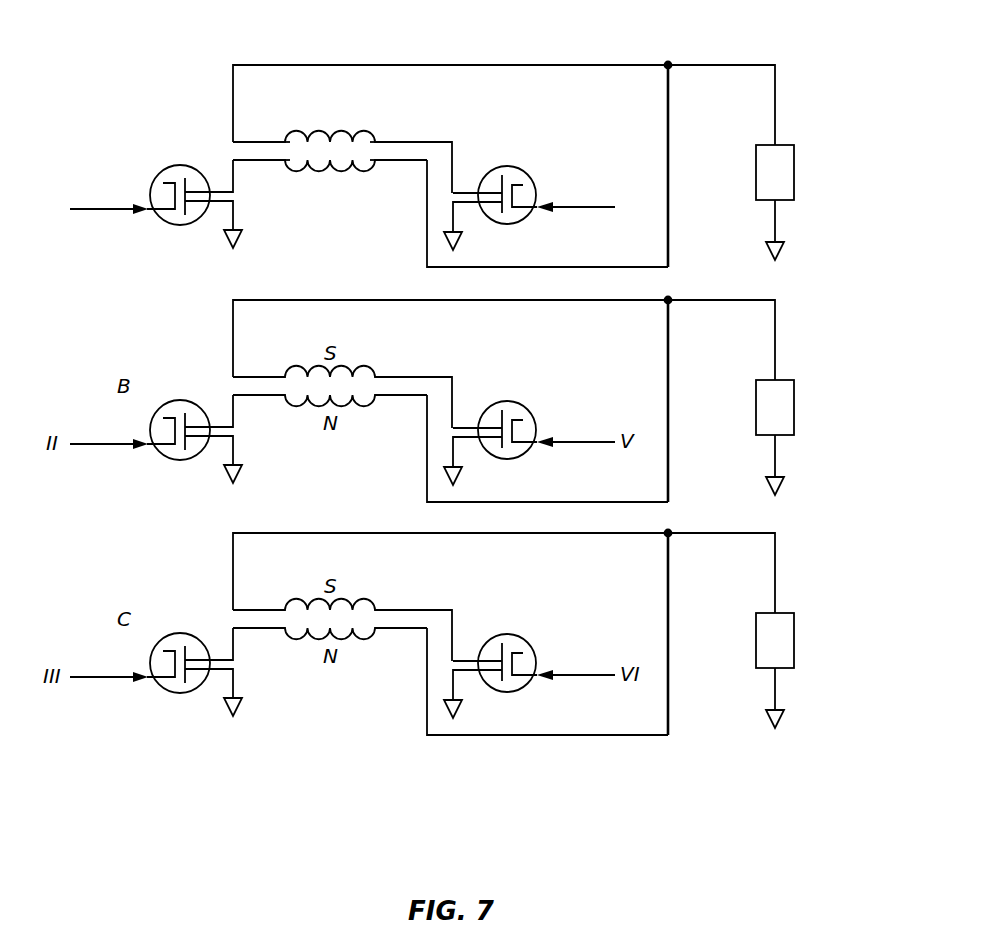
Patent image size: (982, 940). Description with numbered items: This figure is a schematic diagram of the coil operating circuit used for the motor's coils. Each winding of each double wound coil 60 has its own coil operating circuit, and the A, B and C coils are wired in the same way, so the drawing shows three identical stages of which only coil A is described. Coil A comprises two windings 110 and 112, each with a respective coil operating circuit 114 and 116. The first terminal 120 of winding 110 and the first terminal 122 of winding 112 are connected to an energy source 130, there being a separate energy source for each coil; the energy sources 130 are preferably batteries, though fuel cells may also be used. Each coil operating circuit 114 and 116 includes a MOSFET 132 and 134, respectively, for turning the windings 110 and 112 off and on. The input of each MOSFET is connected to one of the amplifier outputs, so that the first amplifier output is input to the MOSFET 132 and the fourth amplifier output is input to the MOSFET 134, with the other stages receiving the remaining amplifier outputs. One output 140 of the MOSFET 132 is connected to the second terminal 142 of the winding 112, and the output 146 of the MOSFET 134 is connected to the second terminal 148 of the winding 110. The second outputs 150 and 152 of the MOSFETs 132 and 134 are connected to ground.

The double wound coil 60 is at (120, 60).
The winding 110 is at (365, 130).
The winding 112 is at (295, 172).
The coil operating circuit 114 is at (545, 198).
The coil operating circuit 116 is at (142, 215).
The first terminal 120 is at (282, 140).
The first terminal 122 is at (373, 170).
The energy source 130 is at (795, 172).
The MOSFET 132 is at (182, 227).
The MOSFET 134 is at (520, 168).
The output 140 is at (233, 173).
The second terminal 142 is at (285, 168).
The output 146 is at (455, 150).
The second terminal 148 is at (375, 140).
The second output 150 is at (218, 203).
The second output 152 is at (458, 222).